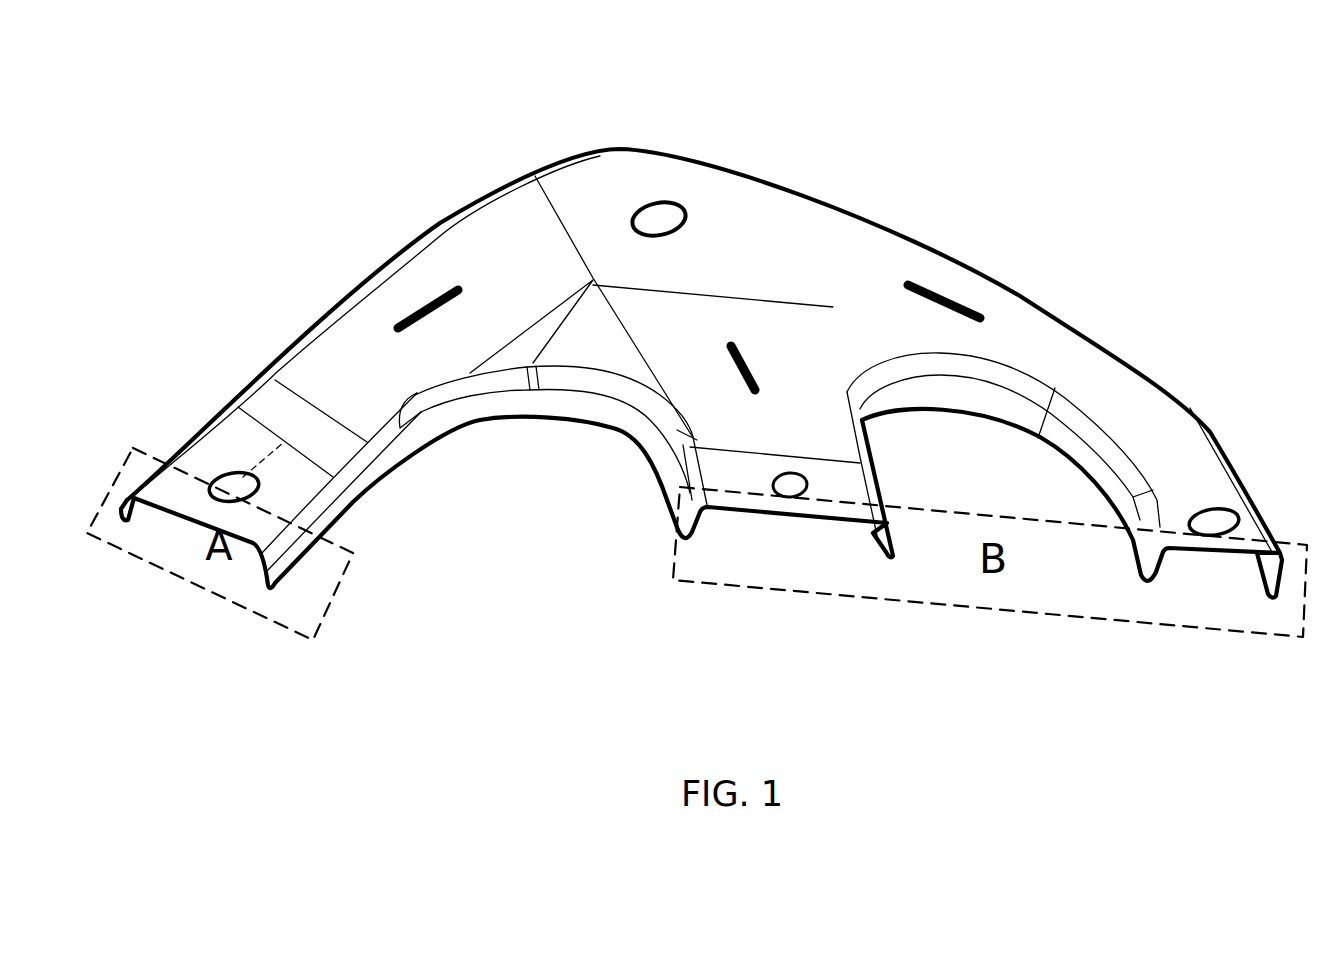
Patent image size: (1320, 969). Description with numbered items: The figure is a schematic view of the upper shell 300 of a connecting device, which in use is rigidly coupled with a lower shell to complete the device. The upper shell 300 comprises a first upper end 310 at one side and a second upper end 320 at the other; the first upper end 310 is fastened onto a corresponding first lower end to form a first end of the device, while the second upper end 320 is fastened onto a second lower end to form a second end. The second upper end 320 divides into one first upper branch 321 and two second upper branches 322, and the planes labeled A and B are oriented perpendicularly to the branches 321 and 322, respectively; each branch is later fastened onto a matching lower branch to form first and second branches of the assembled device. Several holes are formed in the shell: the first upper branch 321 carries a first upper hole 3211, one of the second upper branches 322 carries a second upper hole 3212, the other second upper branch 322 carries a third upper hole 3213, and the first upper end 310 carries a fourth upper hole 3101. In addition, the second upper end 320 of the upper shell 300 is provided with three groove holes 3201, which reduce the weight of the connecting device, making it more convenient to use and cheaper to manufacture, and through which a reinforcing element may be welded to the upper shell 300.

The upper shell 300 is at (343, 380).
The first upper end 310 is at (625, 173).
The fourth upper hole 3101 is at (645, 203).
The groove hole 3201 is at (950, 293).
The second upper end 320 is at (742, 490).
The first upper branch 321 is at (190, 470).
The first upper hole 3211 is at (236, 505).
The second upper hole 3212 is at (789, 497).
The second upper branch 322 is at (1178, 505).
The third upper hole 3213 is at (1215, 534).